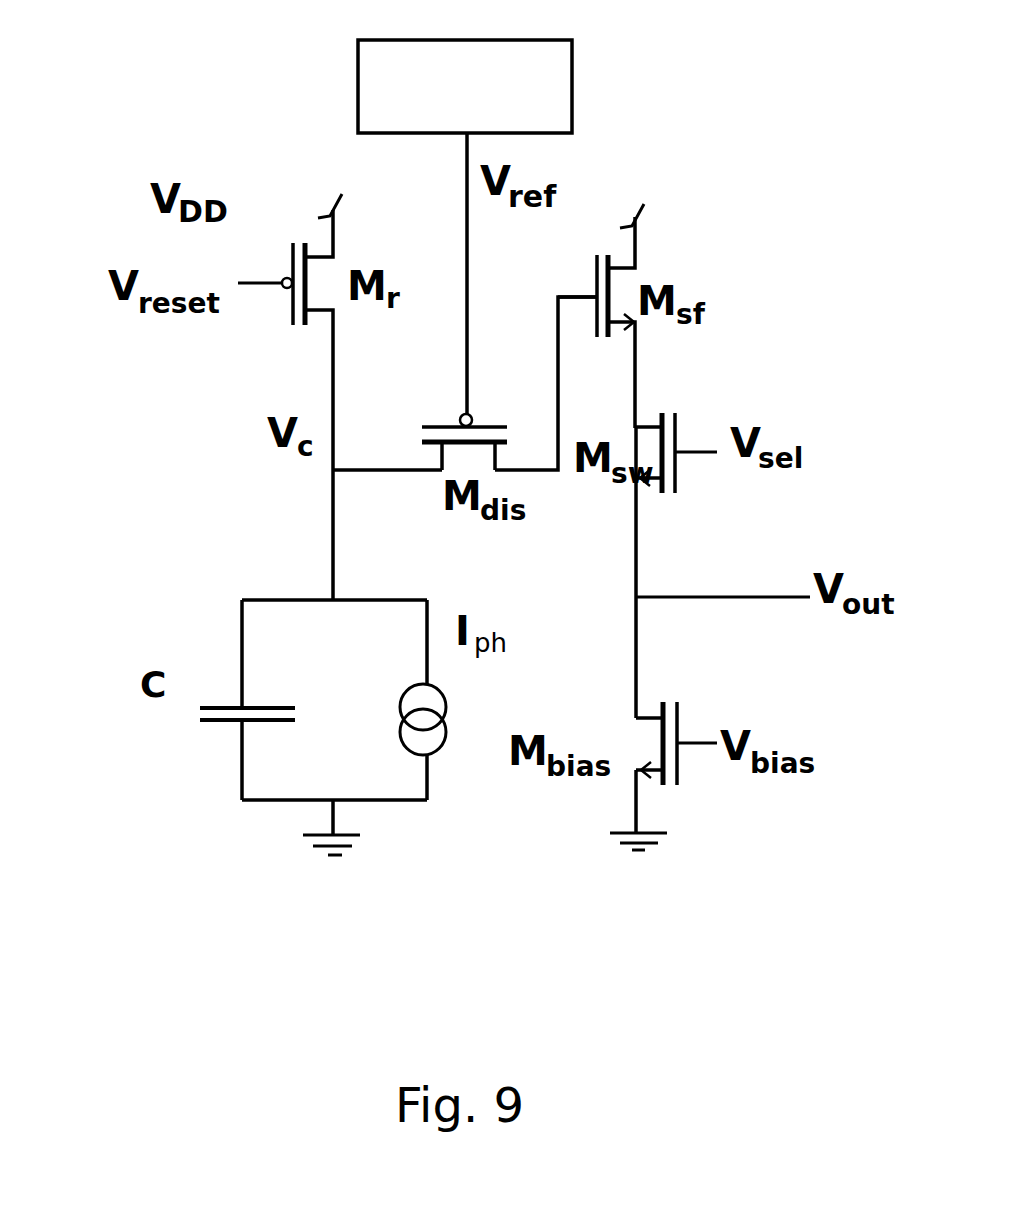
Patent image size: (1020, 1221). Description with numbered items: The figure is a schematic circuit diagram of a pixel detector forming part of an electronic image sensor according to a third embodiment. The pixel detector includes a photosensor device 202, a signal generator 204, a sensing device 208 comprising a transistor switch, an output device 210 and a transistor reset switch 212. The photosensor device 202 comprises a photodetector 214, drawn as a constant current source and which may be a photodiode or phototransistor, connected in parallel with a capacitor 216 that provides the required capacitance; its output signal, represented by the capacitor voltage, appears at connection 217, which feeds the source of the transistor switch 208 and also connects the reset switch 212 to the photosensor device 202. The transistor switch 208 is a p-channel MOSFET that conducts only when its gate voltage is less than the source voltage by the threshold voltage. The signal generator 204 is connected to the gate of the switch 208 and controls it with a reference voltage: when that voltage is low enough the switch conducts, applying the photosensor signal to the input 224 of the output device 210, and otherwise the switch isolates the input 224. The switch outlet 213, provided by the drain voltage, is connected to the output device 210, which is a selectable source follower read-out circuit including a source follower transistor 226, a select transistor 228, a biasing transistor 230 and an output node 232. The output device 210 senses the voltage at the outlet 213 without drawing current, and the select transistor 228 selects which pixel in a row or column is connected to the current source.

The photosensor device 202 is at (225, 817).
The signal generator 204 is at (525, 60).
The sensing device 208 is at (437, 422).
The output device 210 is at (668, 232).
The transistor reset switch 212 is at (292, 240).
The outlet 213 is at (553, 478).
The photodetector 214 is at (442, 755).
The capacitor 216 is at (208, 727).
The connection 217 is at (325, 475).
The input 224 is at (550, 293).
The source follower transistor 226 is at (638, 322).
The select transistor 228 is at (682, 478).
The biasing transistor 230 is at (683, 782).
The output node 232 is at (773, 605).